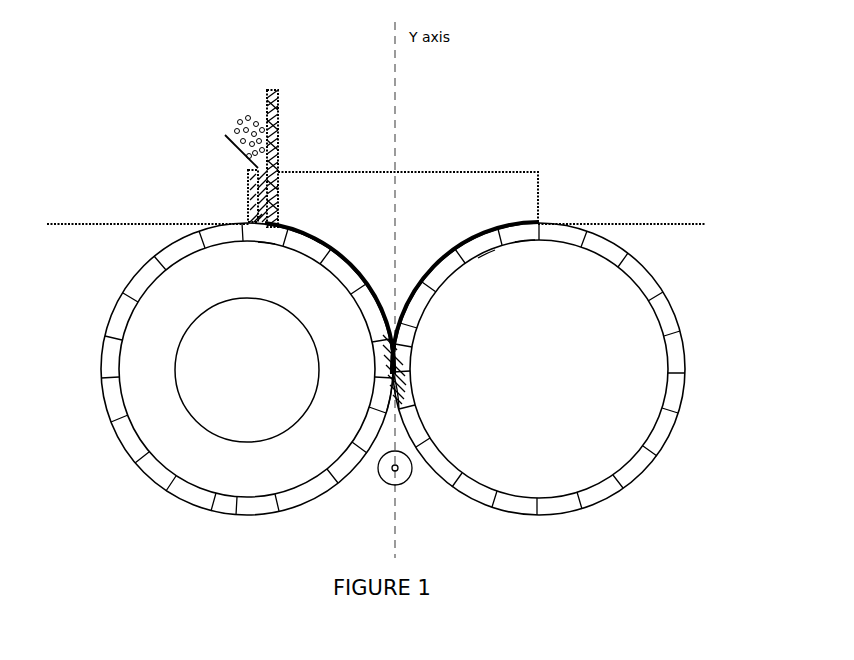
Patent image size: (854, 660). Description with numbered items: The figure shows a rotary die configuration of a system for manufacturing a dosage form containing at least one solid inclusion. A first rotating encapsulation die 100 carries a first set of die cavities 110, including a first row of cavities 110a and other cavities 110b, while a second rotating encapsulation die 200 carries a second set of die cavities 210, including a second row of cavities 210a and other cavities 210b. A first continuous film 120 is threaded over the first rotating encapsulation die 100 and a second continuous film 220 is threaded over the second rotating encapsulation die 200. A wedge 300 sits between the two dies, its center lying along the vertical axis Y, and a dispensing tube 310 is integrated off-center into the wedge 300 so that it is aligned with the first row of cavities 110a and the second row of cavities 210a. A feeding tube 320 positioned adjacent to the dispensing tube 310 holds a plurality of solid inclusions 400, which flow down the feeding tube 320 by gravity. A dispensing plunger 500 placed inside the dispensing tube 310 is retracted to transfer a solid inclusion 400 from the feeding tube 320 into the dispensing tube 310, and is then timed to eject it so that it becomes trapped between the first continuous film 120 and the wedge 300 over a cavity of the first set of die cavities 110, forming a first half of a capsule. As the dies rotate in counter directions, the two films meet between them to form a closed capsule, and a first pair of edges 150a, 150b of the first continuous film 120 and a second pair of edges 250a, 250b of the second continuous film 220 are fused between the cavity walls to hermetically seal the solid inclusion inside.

The first rotating encapsulation die 100 is at (268, 356).
The first set of die cavities 110 is at (183, 250).
The first row of cavities 110a is at (259, 243).
The other cavities of the first rotating encapsulation die 110b is at (303, 253).
The first continuous film 120 is at (92, 220).
The first edge of the first continuous film 150a is at (381, 410).
The second edge of the first continuous film 150b is at (384, 374).
The second rotating encapsulation die 200 is at (548, 358).
The second set of die cavities 210 is at (607, 257).
The second row of cavities 210a is at (520, 241).
The other cavities of the second rotating encapsulation die 210b is at (482, 256).
The second continuous film 220 is at (673, 222).
The first edge of the second continuous film 250a is at (412, 393).
The second edge of the second continuous film 250b is at (411, 370).
The wedge 300 is at (386, 208).
The dispensing tube 310 is at (306, 234).
The feeding tube 320 is at (248, 190).
The solid inclusions 400 is at (240, 128).
The dispensing plunger 500 is at (280, 82).